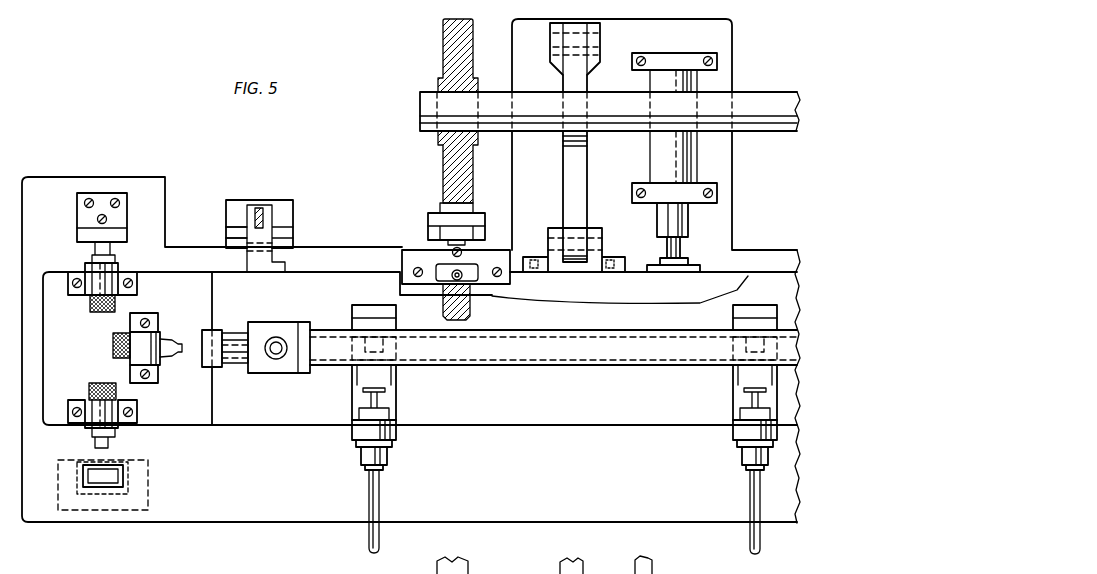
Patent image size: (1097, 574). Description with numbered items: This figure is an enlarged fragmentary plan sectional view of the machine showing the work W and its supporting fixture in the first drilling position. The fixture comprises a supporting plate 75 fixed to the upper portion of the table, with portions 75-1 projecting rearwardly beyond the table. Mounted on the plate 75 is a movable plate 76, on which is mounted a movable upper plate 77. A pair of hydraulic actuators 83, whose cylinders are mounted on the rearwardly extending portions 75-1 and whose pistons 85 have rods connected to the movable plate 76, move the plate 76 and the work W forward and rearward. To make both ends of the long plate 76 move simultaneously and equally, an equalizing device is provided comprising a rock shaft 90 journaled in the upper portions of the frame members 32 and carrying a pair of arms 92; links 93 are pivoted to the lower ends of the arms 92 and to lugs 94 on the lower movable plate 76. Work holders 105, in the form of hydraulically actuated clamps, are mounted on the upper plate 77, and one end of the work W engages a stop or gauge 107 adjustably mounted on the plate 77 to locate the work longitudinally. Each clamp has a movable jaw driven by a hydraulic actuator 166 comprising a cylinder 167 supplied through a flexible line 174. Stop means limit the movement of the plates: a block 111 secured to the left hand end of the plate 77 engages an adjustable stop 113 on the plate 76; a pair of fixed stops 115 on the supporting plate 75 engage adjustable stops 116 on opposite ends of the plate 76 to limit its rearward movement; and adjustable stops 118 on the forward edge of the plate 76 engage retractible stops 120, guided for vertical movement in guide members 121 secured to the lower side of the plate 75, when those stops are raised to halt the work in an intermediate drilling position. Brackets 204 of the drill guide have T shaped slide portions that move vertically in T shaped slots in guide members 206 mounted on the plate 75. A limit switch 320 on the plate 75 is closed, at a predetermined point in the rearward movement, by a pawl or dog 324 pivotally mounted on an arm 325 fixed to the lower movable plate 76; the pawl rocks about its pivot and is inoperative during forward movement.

The frame member 32 is at (456, 52).
The supporting plate 75 is at (243, 514).
The rearwardly projecting portion 75-1 is at (722, 40).
The movable plate 76 is at (196, 419).
The movable upper plate 77 is at (264, 417).
The hydraulic actuator 83 is at (708, 86).
The piston 85 is at (676, 245).
The rock shaft 90 is at (776, 132).
The arm 92 is at (571, 85).
The link 93 is at (576, 186).
The lug 94 is at (606, 258).
The work holder 105 is at (410, 385).
The stop or gauge 107 is at (303, 322).
The block 111 is at (201, 331).
The adjustable stop 113 is at (167, 385).
The fixed stop 115 is at (82, 232).
The adjustable stop 116 is at (90, 303).
The adjustable stop 118 is at (92, 405).
The retractible stop 120 is at (103, 484).
The guide member 121 is at (78, 492).
The hydraulic actuator 166 is at (408, 441).
The cylinder 167 is at (361, 455).
The flexible line 174 is at (379, 504).
The bracket 204 is at (470, 304).
The guide member 206 is at (416, 262).
The limit switch 320 is at (282, 206).
The pawl or dog 324 is at (264, 218).
The arm 325 is at (228, 227).
The work W is at (568, 360).